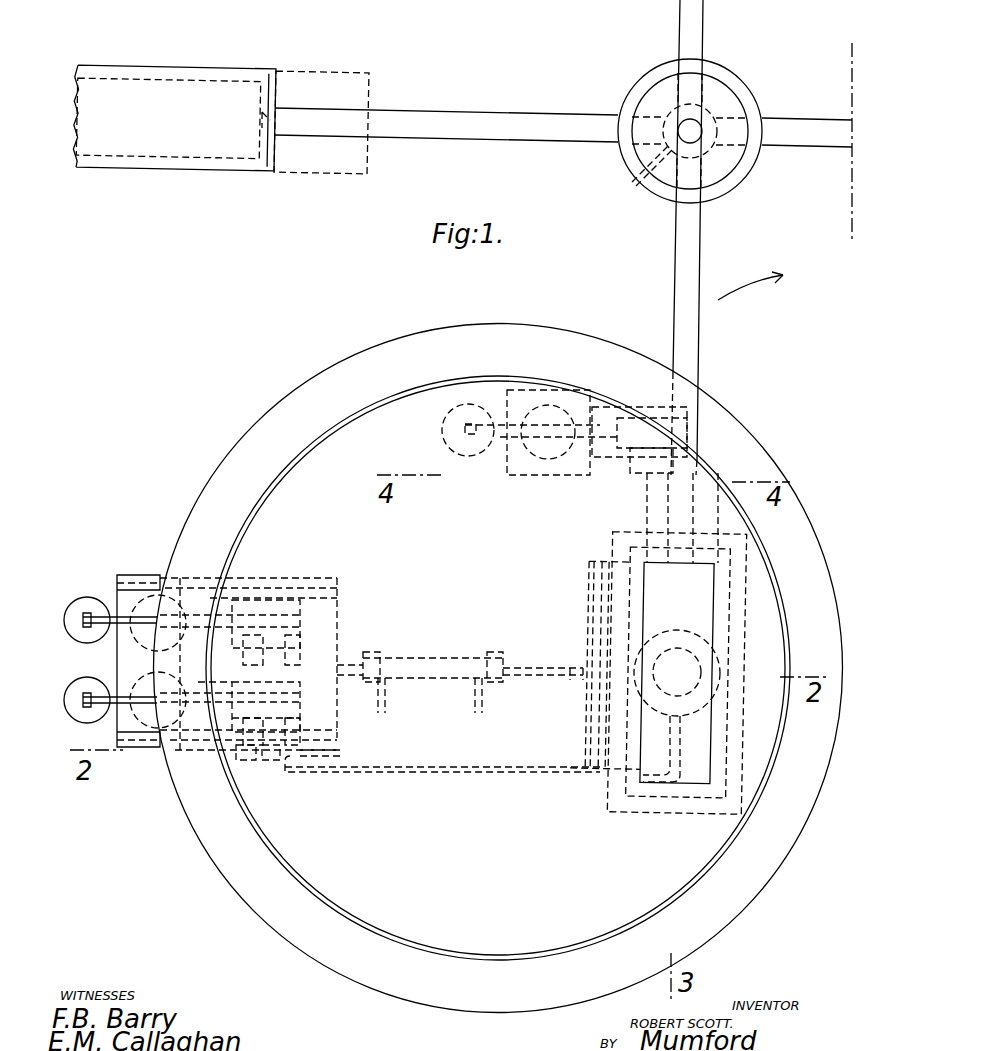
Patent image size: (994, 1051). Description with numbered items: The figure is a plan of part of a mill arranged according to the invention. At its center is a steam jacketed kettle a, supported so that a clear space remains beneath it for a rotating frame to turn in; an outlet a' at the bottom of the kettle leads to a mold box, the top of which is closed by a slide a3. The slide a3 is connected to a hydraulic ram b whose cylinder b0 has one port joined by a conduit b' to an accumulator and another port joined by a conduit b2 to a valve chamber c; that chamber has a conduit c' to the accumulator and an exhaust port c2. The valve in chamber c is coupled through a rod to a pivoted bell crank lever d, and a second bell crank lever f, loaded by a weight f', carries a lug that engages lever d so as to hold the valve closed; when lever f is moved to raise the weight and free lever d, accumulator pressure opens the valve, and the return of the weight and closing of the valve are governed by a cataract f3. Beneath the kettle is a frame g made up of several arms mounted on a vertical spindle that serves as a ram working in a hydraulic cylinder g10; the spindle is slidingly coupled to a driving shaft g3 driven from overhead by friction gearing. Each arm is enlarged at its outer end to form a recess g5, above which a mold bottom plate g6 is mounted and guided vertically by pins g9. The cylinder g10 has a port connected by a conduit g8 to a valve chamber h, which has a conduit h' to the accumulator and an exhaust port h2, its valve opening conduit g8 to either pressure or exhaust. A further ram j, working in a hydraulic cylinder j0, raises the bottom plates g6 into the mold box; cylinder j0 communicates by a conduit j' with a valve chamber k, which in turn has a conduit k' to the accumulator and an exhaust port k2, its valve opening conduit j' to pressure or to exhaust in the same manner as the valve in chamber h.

The steam jacketed kettle a is at (498, 668).
The outlet a' is at (621, 672).
The slide a3 is at (655, 583).
The hydraulic ram b is at (543, 697).
The cylinder b0 is at (415, 663).
The conduit b' is at (400, 706).
The conduit b2 is at (463, 723).
The valve chamber c is at (639, 408).
The conduit c' is at (631, 464).
The exhaust port c2 is at (653, 478).
The bell crank lever d is at (560, 435).
The second bell crank lever f is at (541, 389).
The weight f' is at (468, 461).
The cataract f3 is at (558, 407).
The frame g is at (718, 12).
The driving shaft g3 is at (703, 125).
The recess g5 is at (205, 80).
The mold bottom plate g6 is at (155, 147).
The conduit g8 is at (243, 659).
The pins g9 is at (267, 123).
The hydraulic cylinder g10 is at (710, 150).
The valve chamber h is at (246, 646).
The exhaust port h2 is at (262, 662).
The conduit h' is at (315, 641).
The ram j is at (695, 706).
The hydraulic cylinder j0 is at (680, 622).
The conduit j' is at (442, 786).
The valve chamber k is at (264, 707).
The conduit k' is at (200, 790).
The exhaust port k2 is at (260, 753).